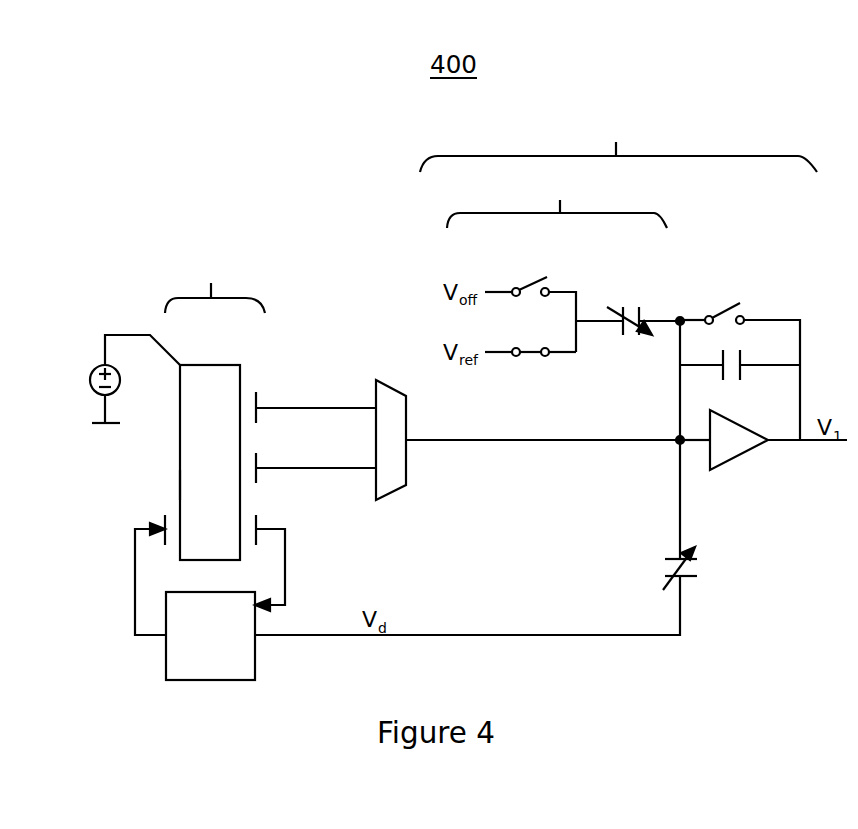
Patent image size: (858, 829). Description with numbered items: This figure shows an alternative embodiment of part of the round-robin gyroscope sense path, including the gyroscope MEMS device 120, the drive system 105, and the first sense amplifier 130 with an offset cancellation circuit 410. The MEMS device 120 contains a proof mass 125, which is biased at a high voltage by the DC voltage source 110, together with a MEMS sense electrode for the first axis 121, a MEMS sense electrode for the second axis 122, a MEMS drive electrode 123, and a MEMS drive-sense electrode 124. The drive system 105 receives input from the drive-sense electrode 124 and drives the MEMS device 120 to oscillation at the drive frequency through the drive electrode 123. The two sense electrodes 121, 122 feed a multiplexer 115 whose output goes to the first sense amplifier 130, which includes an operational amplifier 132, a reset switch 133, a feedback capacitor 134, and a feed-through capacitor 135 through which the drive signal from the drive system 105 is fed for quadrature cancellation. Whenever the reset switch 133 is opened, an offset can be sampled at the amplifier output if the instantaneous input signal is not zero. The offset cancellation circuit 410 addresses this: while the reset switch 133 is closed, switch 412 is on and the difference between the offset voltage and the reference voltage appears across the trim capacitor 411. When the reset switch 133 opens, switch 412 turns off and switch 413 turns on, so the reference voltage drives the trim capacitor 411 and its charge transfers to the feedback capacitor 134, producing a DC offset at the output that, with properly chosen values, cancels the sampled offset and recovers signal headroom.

The drive system 105 is at (212, 687).
The DC voltage source 110 is at (92, 368).
The multiplexer 115 is at (393, 380).
The gyroscope MEMS device 120 is at (215, 408).
The MEMS sense electrode for the first axis 121 is at (262, 401).
The MEMS sense electrode for the second axis 122 is at (262, 461).
The MEMS drive electrode 123 is at (152, 522).
The MEMS drive-sense electrode 124 is at (262, 526).
The proof mass 125 is at (175, 485).
The first sense amplifier 130 is at (618, 145).
The operational amplifier 132 is at (740, 468).
The reset switch 133 is at (733, 293).
The feedback capacitor 134 is at (735, 383).
The feed-through capacitor 135 is at (662, 558).
The offset cancellation circuit 410 is at (557, 203).
The trim capacitor 411 is at (628, 292).
The switch 412 is at (525, 277).
The switch 413 is at (532, 367).